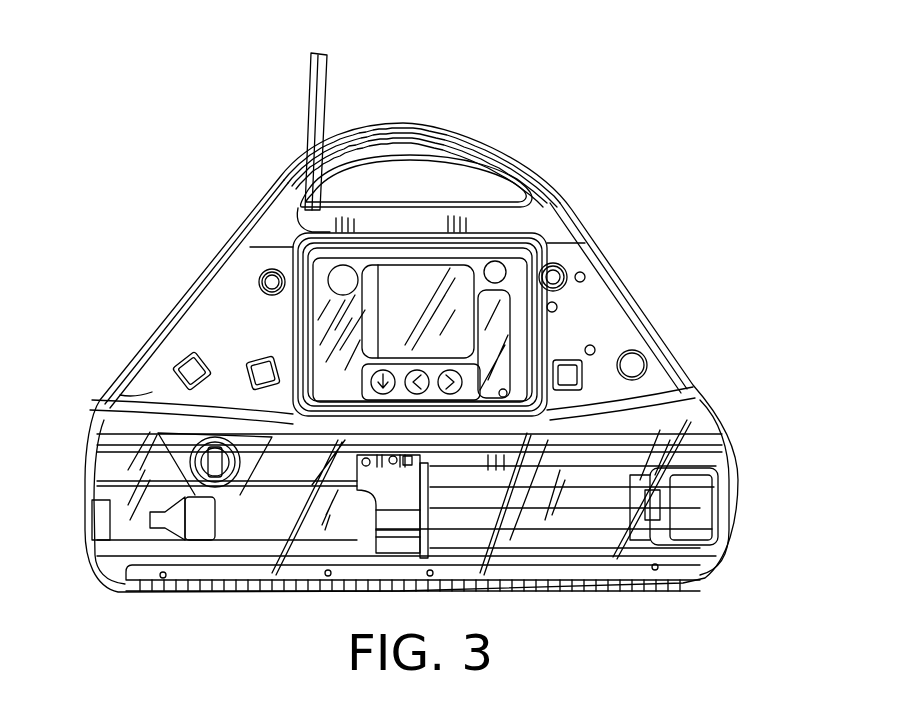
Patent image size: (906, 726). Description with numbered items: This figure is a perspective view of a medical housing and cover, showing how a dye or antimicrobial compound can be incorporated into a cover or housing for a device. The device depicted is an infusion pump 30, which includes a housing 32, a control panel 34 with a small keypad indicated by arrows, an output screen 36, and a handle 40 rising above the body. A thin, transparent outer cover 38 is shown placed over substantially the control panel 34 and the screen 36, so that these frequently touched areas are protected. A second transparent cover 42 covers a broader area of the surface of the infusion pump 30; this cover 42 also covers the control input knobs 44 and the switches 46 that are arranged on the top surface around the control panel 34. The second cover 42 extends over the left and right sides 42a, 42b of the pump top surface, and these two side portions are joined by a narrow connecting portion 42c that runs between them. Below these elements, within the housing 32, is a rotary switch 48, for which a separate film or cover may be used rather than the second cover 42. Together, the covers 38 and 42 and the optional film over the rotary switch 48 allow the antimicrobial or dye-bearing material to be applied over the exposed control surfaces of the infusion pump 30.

The infusion pump 30 is at (738, 212).
The housing 32 is at (745, 466).
The control panel 34 is at (549, 240).
The output screen 36 is at (505, 86).
The outer cover 38 is at (308, 228).
The handle 40 is at (425, 140).
The second transparent cover 42 is at (157, 372).
The left side 42a is at (280, 315).
The right side 42b is at (615, 315).
The narrow connecting portion 42c is at (148, 391).
The control input knobs 44 is at (262, 270).
The switches 46 is at (190, 345).
The rotary switch 48 is at (195, 460).